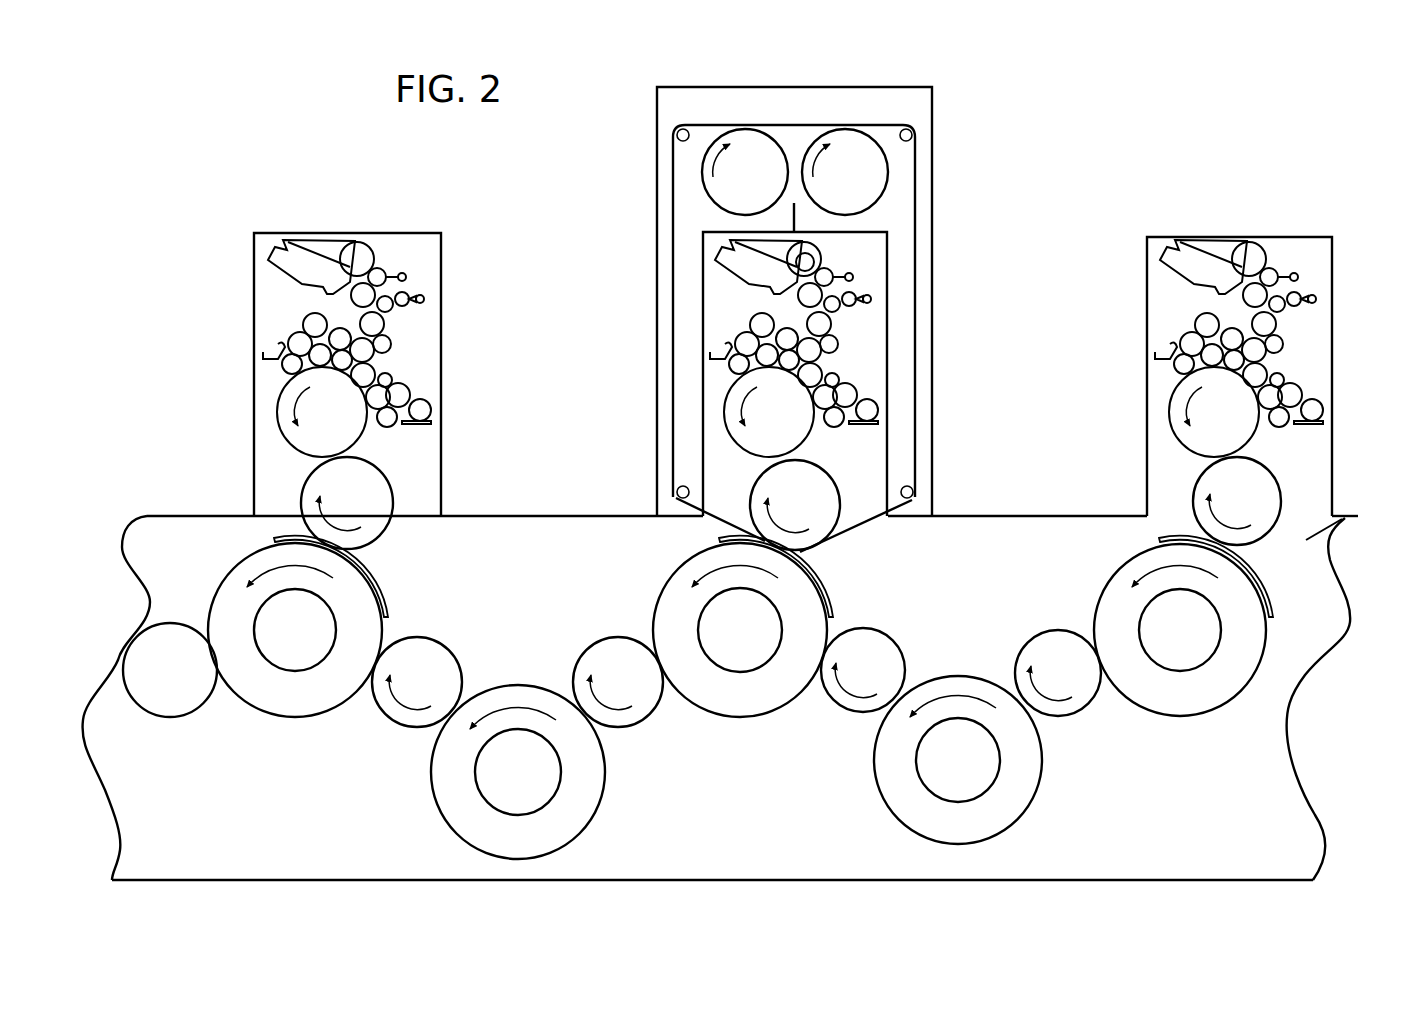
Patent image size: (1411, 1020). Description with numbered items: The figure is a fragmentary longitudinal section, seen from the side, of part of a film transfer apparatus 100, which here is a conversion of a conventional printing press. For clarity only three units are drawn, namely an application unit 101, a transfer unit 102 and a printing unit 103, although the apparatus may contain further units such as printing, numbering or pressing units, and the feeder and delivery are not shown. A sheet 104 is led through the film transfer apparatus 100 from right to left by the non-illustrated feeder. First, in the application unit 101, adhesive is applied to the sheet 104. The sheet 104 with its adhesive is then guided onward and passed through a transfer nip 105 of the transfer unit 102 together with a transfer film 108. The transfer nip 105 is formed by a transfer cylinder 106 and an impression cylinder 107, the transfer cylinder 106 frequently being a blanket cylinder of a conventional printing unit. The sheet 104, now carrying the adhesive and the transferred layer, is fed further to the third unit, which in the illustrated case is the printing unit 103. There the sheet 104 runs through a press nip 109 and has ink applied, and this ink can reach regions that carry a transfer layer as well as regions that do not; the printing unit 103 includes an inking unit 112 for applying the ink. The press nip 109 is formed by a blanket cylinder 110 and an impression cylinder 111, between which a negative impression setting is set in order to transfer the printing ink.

The film transfer apparatus 100 is at (1147, 131).
The application unit 101 is at (1273, 237).
The transfer unit 102 is at (851, 294).
The printing unit 103 is at (283, 320).
The sheet 104 is at (1346, 519).
The transfer nip 105 is at (726, 530).
The transfer cylinder 106 is at (813, 517).
The impression cylinder 107 is at (735, 693).
The transfer film 108 is at (913, 222).
The press nip 109 is at (368, 551).
The blanket cylinder 110 is at (327, 490).
The impression cylinder 111 is at (297, 692).
The inking unit 112 is at (270, 316).